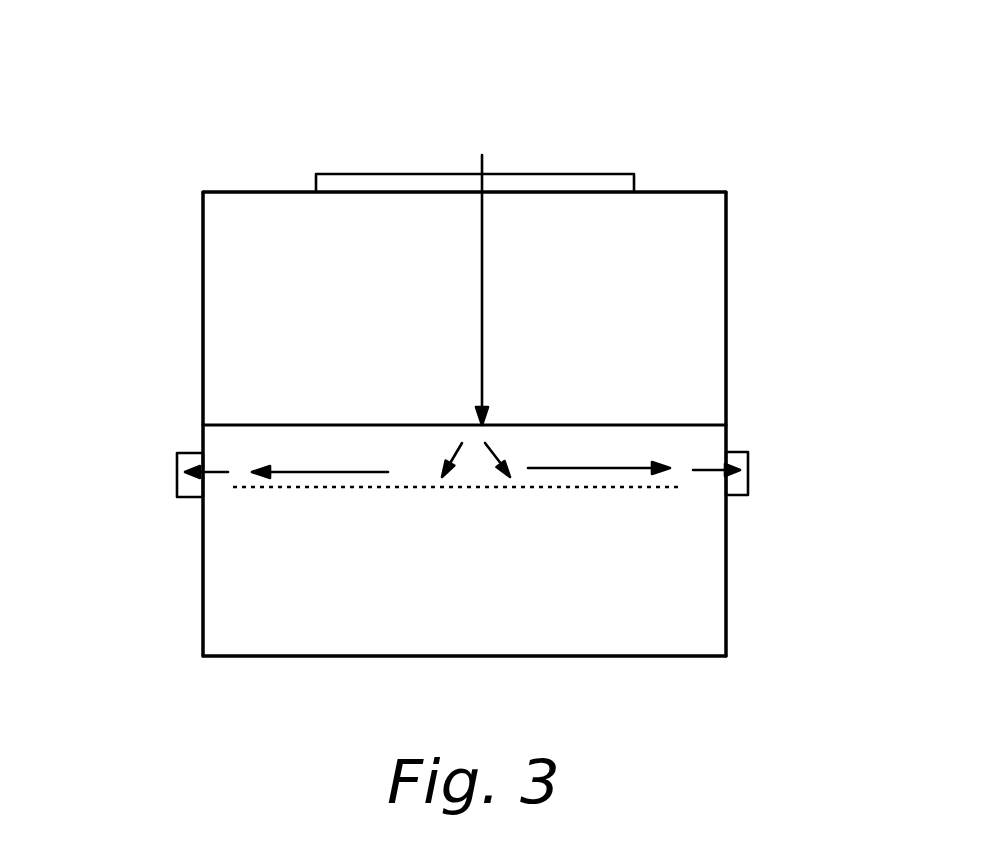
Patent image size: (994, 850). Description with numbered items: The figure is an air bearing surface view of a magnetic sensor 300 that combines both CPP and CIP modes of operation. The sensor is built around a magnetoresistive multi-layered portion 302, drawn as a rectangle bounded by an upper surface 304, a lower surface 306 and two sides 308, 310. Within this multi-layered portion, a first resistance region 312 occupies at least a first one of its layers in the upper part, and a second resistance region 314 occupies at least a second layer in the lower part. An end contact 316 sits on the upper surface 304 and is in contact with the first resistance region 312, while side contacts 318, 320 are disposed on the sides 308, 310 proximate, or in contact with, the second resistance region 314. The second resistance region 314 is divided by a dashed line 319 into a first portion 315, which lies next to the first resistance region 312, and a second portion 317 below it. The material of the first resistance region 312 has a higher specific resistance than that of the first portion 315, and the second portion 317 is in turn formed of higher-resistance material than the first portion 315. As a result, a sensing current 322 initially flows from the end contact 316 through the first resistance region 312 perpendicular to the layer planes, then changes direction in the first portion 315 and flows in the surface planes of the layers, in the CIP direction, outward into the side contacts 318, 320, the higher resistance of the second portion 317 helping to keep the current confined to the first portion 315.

The magnetic sensor 300 is at (541, 69).
The magnetoresistive multi-layered portion 302 is at (168, 235).
The upper surface 304 is at (282, 192).
The lower surface 306 is at (300, 656).
The side 308 is at (203, 581).
The side 310 is at (726, 567).
The first resistance region 312 is at (610, 368).
The second resistance region 314 is at (315, 610).
The first portion of second resistance region 315 is at (677, 447).
The end contact 316 is at (596, 180).
The second portion of second resistance region 317 is at (663, 615).
The side contact 318 is at (187, 490).
The dashed line 319 is at (678, 487).
The side contact 320 is at (737, 452).
The sensing current 322 is at (476, 222).